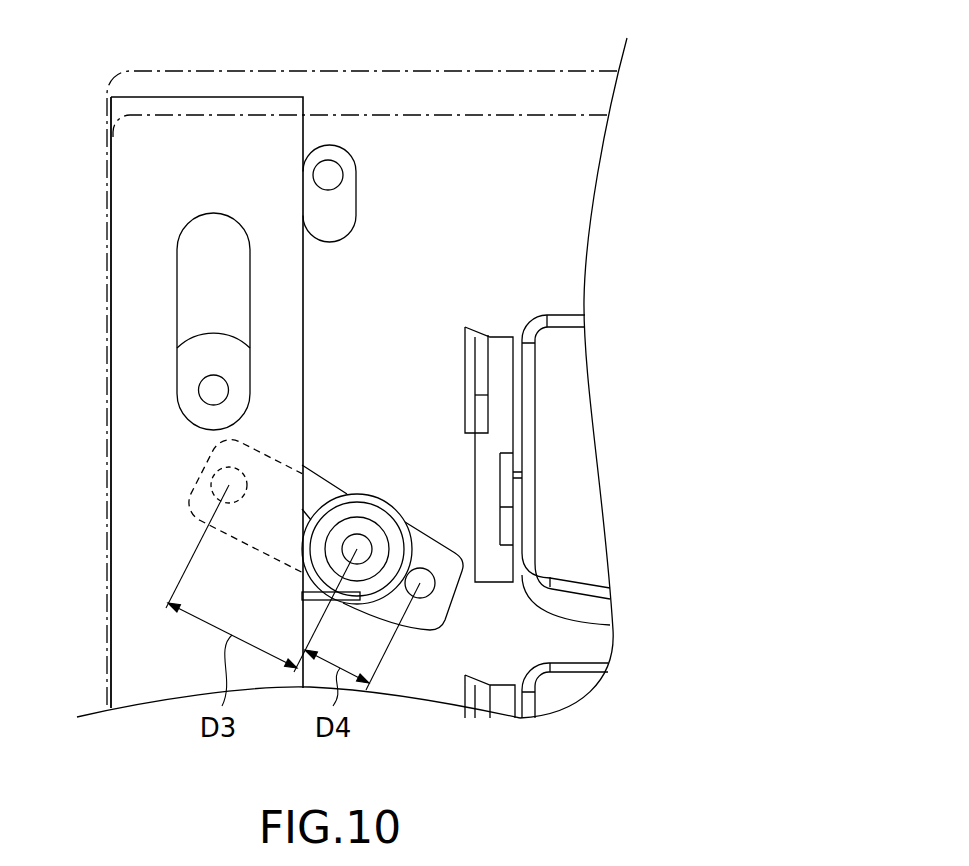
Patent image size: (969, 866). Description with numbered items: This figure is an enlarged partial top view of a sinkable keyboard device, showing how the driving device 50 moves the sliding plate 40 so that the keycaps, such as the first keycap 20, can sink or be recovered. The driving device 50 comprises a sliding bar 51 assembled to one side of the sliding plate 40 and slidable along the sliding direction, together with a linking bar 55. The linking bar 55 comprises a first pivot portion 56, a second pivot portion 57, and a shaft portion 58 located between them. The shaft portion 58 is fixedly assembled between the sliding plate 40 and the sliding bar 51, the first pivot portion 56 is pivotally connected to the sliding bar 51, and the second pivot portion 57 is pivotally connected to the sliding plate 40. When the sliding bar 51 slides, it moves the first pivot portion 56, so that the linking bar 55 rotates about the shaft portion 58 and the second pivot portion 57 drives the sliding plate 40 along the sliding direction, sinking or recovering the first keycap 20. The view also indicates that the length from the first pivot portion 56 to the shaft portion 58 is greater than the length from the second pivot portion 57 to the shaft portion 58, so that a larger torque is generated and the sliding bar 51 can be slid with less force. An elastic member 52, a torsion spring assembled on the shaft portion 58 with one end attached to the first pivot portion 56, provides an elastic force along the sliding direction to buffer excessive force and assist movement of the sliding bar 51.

The first keycap 20 is at (557, 315).
The sliding plate 40 is at (485, 150).
The driving device 50 is at (158, 100).
The sliding bar 51 is at (128, 197).
The elastic member 52 is at (367, 537).
The linking bar 55 is at (195, 485).
The first pivot portion 56 is at (213, 495).
The second pivot portion 57 is at (417, 578).
The shaft portion 58 is at (393, 518).